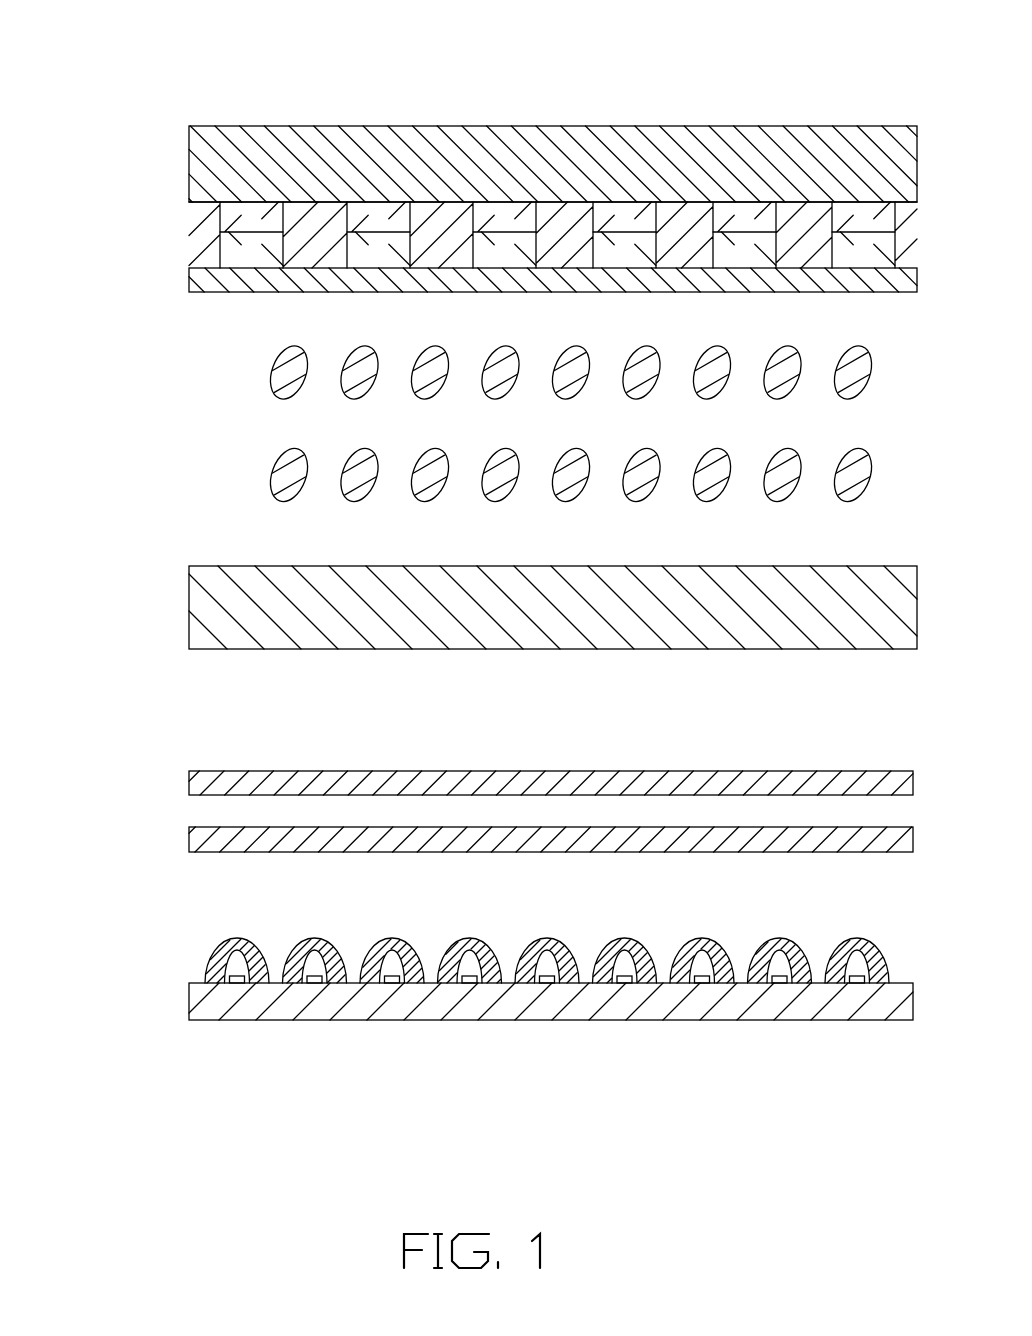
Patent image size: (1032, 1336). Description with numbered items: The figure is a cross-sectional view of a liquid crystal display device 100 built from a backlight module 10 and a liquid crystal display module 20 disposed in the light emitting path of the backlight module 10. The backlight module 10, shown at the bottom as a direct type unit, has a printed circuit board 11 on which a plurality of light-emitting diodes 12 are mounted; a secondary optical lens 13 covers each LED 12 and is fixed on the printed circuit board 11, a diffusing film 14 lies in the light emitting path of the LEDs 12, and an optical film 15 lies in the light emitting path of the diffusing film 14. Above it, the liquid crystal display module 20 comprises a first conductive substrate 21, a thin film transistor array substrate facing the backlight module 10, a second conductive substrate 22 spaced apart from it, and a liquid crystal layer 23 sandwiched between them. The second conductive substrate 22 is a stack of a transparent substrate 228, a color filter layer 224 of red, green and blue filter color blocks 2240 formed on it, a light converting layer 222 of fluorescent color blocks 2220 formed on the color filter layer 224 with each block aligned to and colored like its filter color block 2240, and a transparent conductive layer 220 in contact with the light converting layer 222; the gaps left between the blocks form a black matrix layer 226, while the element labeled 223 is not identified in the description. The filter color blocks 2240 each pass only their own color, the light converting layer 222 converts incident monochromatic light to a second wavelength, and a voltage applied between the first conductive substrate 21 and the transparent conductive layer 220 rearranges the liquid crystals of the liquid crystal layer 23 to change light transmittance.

The liquid crystal display device 100 is at (491, 30).
The backlight module 10 is at (103, 758).
The printed circuit board 11 is at (215, 1000).
The light-emitting diodes 12 is at (233, 980).
The secondary optical lenses 13 is at (223, 950).
The diffusing film 14 is at (197, 838).
The optical film 15 is at (200, 782).
The liquid crystal display module 20 is at (48, 198).
The first conductive substrate 21 is at (247, 577).
The second conductive substrate 22 is at (108, 126).
The liquid crystal layer 23 is at (277, 370).
The transparent conductive layer 220 is at (203, 281).
The light converting layer 222 is at (212, 248).
The fluorescent color blocks 2220 is at (845, 238).
The black matrix 223 is at (345, 230).
The color filter layer 224 is at (212, 212).
The filter color blocks 2240 is at (872, 212).
The black matrix layer 226 is at (280, 202).
The transparent substrate 228 is at (215, 145).